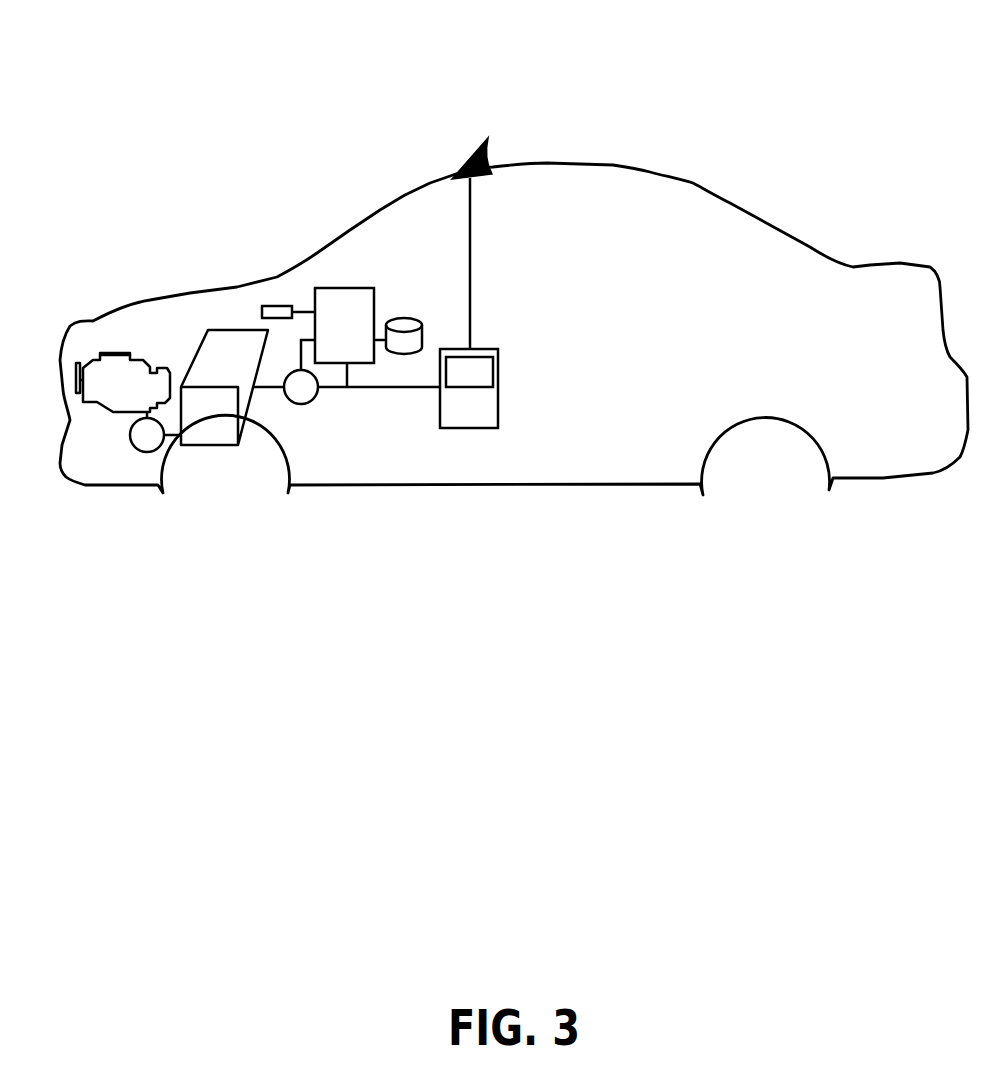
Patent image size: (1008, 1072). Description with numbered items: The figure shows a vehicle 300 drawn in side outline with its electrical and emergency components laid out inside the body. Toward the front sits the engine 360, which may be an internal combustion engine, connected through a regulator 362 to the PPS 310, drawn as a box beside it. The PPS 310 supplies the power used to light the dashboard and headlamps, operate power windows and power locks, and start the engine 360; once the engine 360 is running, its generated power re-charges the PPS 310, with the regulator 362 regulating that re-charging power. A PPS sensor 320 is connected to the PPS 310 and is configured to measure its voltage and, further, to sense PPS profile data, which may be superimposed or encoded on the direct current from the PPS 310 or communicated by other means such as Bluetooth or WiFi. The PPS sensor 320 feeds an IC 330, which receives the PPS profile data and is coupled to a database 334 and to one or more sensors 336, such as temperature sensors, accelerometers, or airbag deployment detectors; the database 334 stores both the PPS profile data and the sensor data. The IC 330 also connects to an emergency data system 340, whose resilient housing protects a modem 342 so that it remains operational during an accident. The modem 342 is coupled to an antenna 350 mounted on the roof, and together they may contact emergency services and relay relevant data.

The vehicle 300 is at (763, 95).
The PPS 310 is at (247, 417).
The PPS sensor 320 is at (305, 401).
The IC 330 is at (345, 288).
The database 334 is at (404, 326).
The sensors 336 is at (276, 306).
The emergency data system 340 is at (486, 349).
The modem 342 is at (494, 372).
The antenna 350 is at (494, 156).
The engine 360 is at (139, 353).
The regulator 362 is at (153, 450).